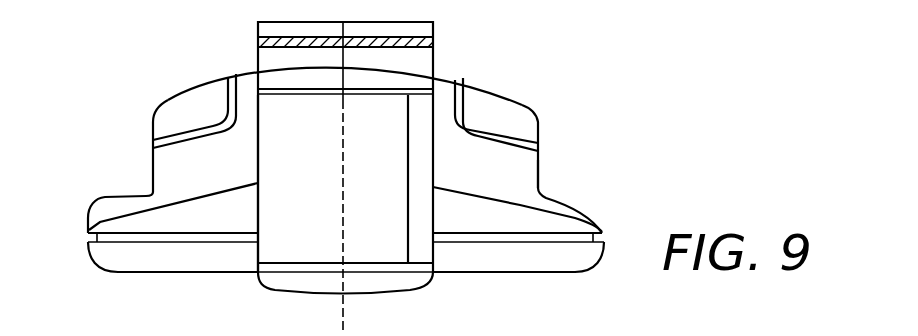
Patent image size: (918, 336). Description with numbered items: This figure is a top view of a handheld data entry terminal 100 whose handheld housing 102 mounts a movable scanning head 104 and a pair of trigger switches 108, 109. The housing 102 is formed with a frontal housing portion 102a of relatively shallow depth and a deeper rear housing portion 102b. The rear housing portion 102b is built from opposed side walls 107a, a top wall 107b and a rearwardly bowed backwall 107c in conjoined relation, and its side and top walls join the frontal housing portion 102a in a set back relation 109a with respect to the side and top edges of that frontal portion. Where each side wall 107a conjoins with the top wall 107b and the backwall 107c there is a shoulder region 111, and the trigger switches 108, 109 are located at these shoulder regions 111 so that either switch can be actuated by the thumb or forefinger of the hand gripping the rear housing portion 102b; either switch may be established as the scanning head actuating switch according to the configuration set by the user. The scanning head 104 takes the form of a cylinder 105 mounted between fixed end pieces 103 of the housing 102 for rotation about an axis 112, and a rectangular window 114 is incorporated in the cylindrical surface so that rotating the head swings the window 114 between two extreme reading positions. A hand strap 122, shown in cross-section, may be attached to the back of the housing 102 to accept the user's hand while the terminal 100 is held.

The data entry terminal 100 is at (124, 122).
The handheld housing 102 is at (153, 167).
The frontal housing portion 102a is at (515, 273).
The rear housing portion 102b is at (522, 170).
The fixed end pieces 103 is at (402, 80).
The scanning head 104 is at (250, 282).
The cylinder 105 is at (257, 168).
The side walls 107a is at (147, 193).
The top wall 107b is at (245, 137).
The backwall 107c is at (272, 70).
The trigger switch 108 is at (218, 62).
The trigger switch 109 is at (490, 108).
The set back relation 109a is at (145, 156).
The shoulder regions 111 is at (165, 103).
The axis 112 is at (343, 215).
The rectangular window 114 is at (425, 168).
The hand strap 122 is at (395, 44).